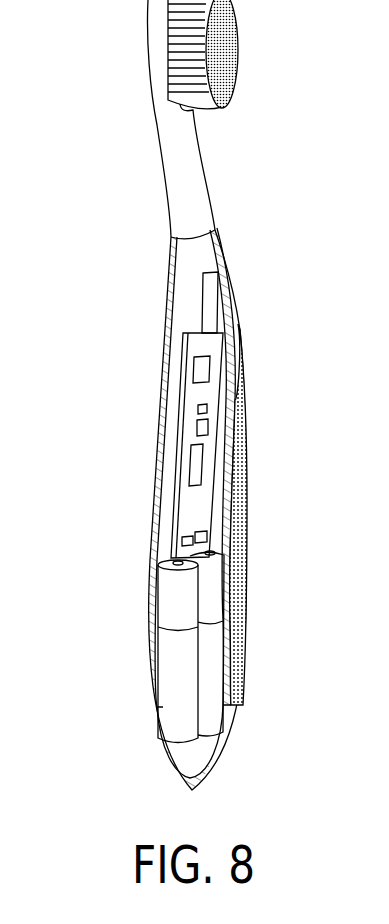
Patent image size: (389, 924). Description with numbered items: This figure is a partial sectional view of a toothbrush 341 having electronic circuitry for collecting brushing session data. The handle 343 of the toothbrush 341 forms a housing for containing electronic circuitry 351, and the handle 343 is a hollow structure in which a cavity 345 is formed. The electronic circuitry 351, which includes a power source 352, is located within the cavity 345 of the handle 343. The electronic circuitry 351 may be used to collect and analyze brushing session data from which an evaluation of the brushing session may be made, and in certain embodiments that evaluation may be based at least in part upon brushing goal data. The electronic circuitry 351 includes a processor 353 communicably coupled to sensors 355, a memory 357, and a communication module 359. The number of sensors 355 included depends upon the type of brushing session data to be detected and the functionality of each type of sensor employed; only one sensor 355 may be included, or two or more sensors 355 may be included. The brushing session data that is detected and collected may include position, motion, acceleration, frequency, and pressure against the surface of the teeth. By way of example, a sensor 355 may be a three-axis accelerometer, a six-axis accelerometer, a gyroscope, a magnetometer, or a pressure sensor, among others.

The toothbrush 341 is at (108, 115).
The handle 343 is at (227, 520).
The cavity 345 is at (165, 522).
The electronic circuitry 351 is at (193, 337).
The power source 352 is at (182, 596).
The processor 353 is at (198, 427).
The sensors 355 is at (198, 368).
The memory 357 is at (200, 409).
The communication module 359 is at (192, 465).